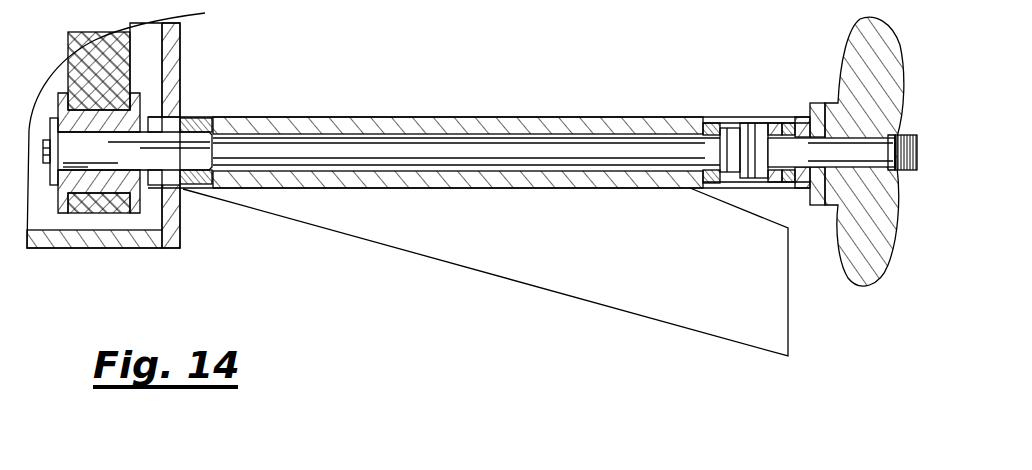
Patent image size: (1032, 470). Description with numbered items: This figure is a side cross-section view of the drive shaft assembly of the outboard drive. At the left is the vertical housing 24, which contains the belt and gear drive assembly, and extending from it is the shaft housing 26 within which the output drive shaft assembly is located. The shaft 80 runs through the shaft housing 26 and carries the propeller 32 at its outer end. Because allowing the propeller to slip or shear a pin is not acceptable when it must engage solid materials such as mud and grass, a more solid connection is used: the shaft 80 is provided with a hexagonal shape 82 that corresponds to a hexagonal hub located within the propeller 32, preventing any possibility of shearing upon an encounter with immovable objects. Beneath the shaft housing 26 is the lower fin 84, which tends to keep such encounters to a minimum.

The vertical housing 24 is at (175, 62).
The shaft housing 26 is at (399, 108).
The shaft 80 is at (580, 152).
The hexagonal shape 82 is at (845, 152).
The propeller 32 is at (868, 245).
The lower fin 84 is at (621, 272).